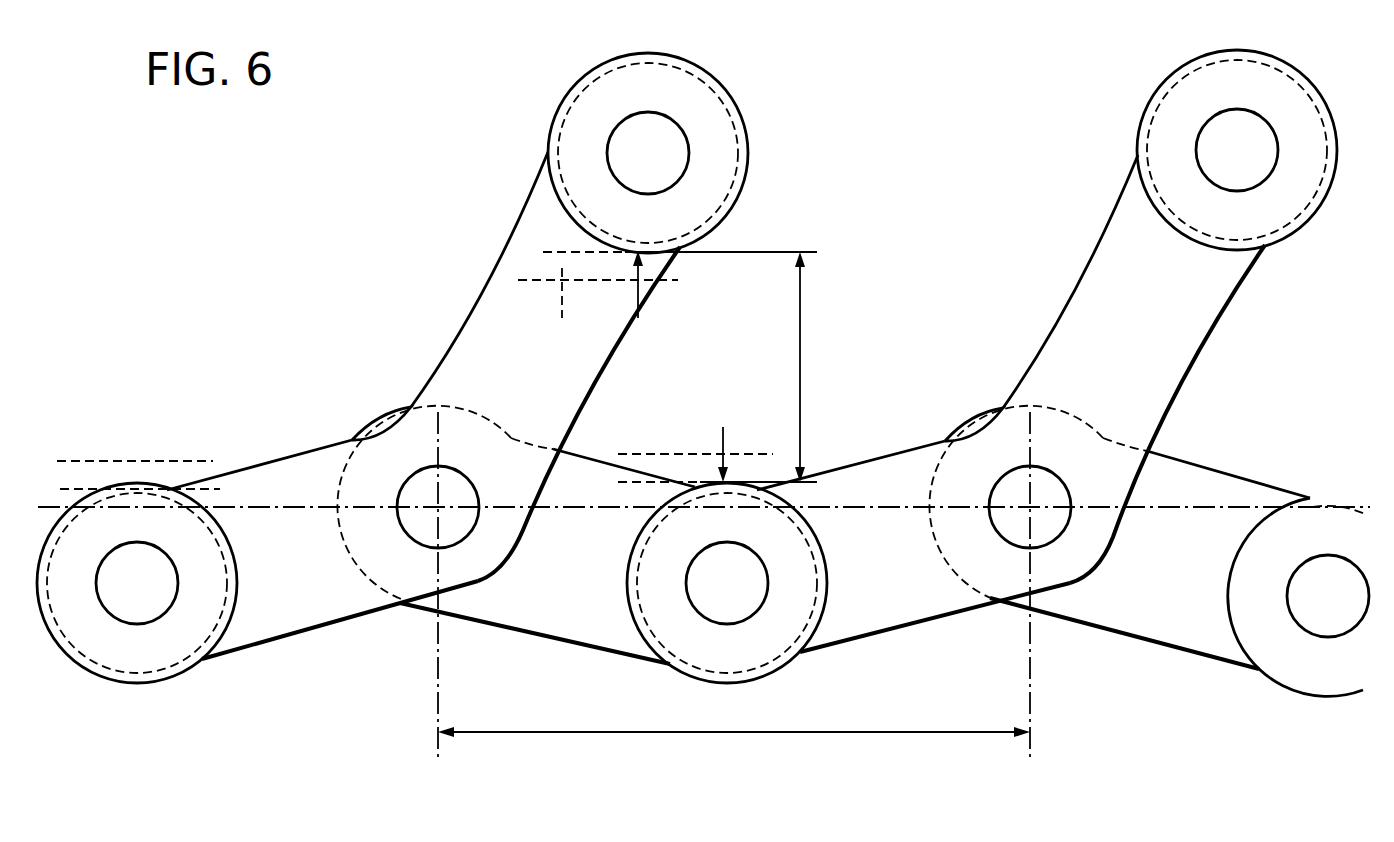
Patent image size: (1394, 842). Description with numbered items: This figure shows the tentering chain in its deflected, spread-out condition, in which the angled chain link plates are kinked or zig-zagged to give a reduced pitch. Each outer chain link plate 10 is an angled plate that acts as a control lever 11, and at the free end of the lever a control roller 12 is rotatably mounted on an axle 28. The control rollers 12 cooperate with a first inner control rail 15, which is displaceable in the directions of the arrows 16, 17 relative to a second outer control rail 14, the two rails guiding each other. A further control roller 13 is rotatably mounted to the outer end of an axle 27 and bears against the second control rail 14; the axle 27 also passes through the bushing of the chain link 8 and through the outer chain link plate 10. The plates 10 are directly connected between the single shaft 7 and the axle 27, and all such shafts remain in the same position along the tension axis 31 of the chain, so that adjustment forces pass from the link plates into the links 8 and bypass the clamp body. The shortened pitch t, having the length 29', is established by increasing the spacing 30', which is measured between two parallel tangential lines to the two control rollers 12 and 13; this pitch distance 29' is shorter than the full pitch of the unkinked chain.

The shaft 7 is at (443, 512).
The chain link 8 is at (560, 600).
The outer chain link plate 10 is at (302, 577).
The control lever 11 is at (488, 338).
The control roller 12 is at (660, 83).
The control roller 13 is at (120, 643).
The second outer control rail 14 is at (160, 472).
The first inner control rail 15 is at (598, 310).
The arrow 16 is at (725, 443).
The arrow 17 is at (641, 310).
The axle 27 is at (135, 583).
The axle 28 is at (660, 160).
The pitch distance 29' is at (734, 738).
The spacing 30' is at (724, 367).
The tension axis 31 is at (258, 505).